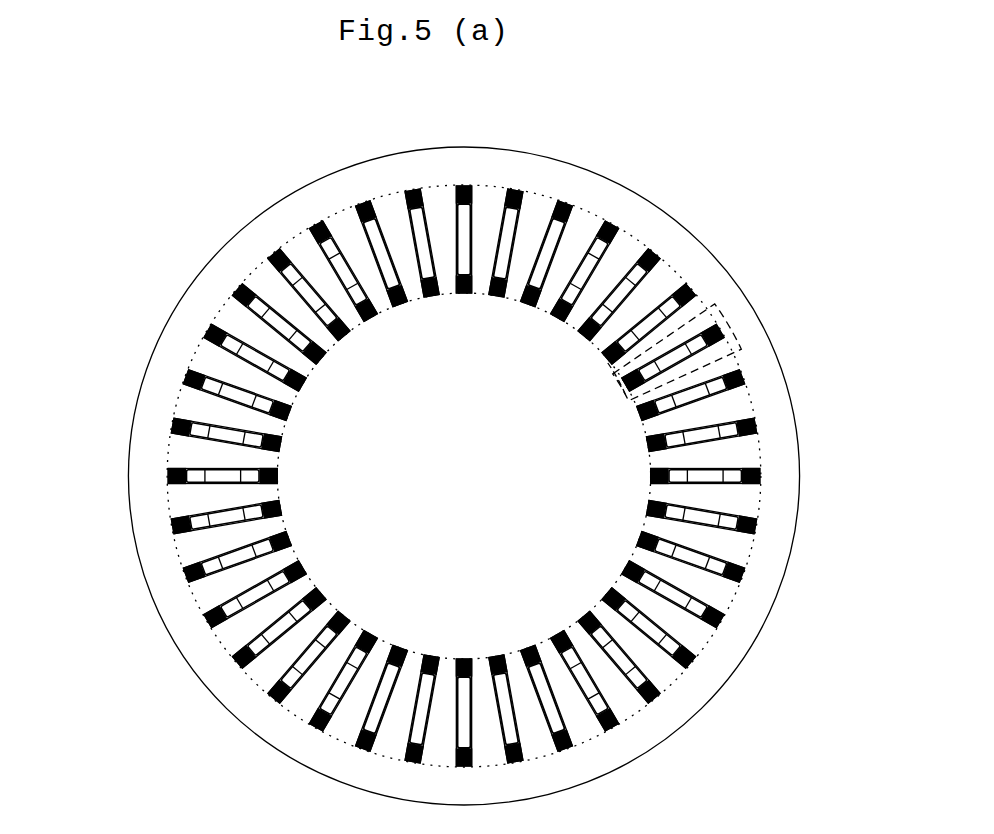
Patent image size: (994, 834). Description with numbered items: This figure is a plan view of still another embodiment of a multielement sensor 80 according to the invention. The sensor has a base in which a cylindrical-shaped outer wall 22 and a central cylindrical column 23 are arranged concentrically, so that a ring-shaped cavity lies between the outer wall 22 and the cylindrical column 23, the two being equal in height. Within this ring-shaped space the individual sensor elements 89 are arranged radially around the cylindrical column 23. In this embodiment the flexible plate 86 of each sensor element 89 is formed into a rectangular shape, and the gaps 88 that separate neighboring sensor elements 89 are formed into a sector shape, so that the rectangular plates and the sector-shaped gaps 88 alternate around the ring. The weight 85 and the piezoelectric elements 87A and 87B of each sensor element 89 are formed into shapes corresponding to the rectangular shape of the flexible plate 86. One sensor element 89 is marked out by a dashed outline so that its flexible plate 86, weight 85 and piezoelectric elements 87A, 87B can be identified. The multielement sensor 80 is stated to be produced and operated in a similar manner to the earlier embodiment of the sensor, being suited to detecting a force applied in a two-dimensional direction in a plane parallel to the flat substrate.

The outer wall 22 is at (767, 575).
The cylindrical column 23 is at (432, 486).
The multielement sensor 80 is at (150, 617).
The weight 85 is at (710, 480).
The flexible plate 86 is at (650, 427).
The piezoelectric element 87A is at (612, 381).
The piezoelectric element 87B is at (742, 381).
The gap 88 is at (698, 456).
The sensor element 89 is at (733, 324).